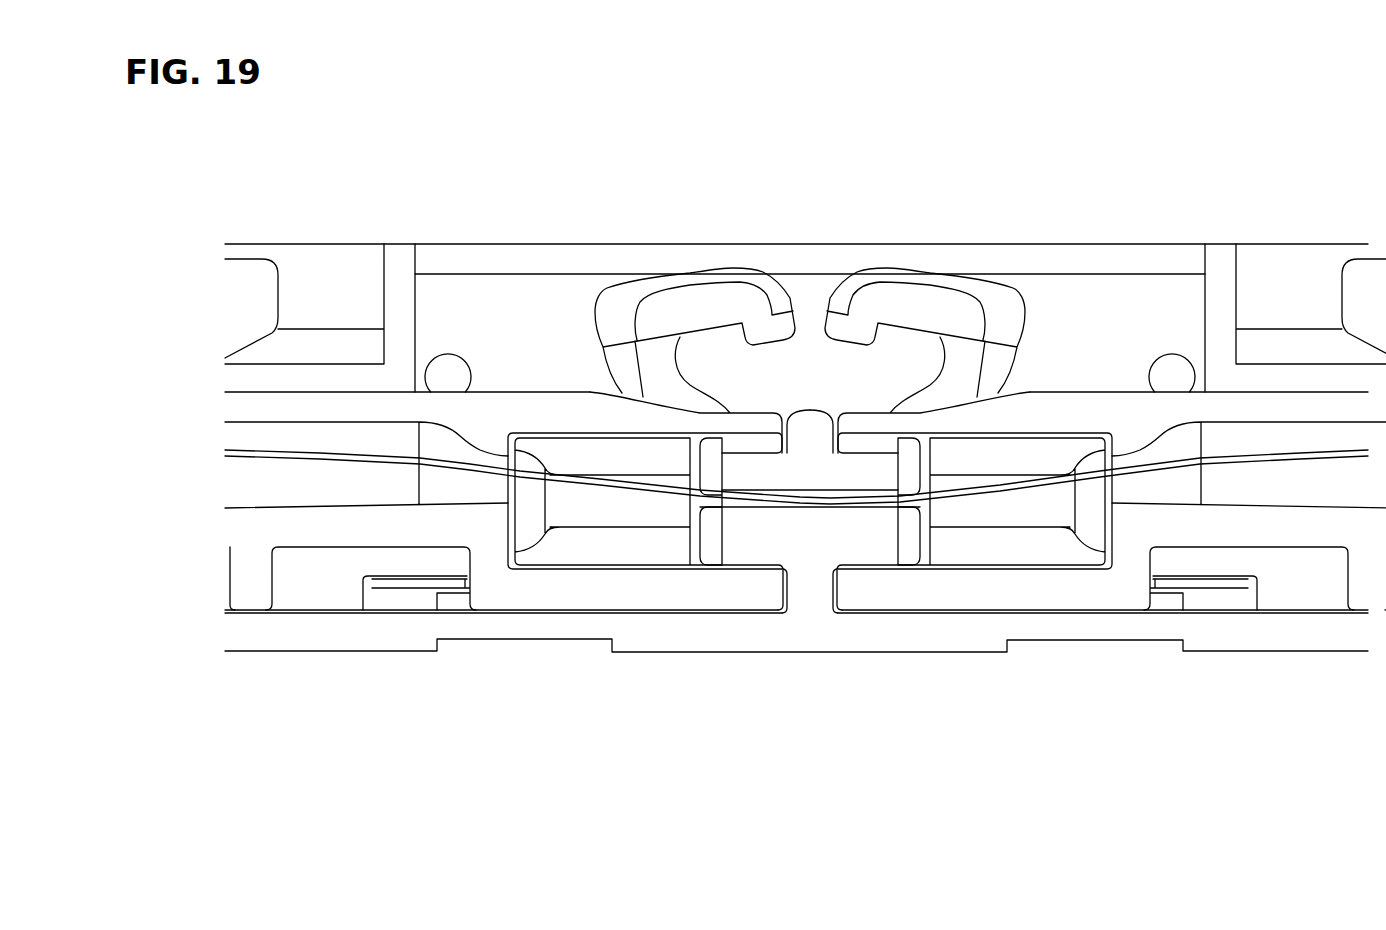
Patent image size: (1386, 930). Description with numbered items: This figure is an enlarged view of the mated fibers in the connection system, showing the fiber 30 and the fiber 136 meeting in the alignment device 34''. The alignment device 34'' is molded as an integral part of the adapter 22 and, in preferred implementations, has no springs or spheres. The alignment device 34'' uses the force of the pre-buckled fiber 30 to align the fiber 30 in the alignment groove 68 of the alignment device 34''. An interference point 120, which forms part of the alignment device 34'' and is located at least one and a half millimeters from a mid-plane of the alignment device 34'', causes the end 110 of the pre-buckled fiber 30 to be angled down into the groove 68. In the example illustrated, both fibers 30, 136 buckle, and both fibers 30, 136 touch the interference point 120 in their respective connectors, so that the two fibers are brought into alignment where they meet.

The adapter 22 is at (497, 255).
The interference point 120 is at (907, 497).
The fiber 136 is at (1027, 480).
The alignment device 34'' is at (822, 408).
The pre-buckled fiber 30 is at (584, 488).
The alignment groove 68 is at (724, 495).
The end 110 is at (808, 503).